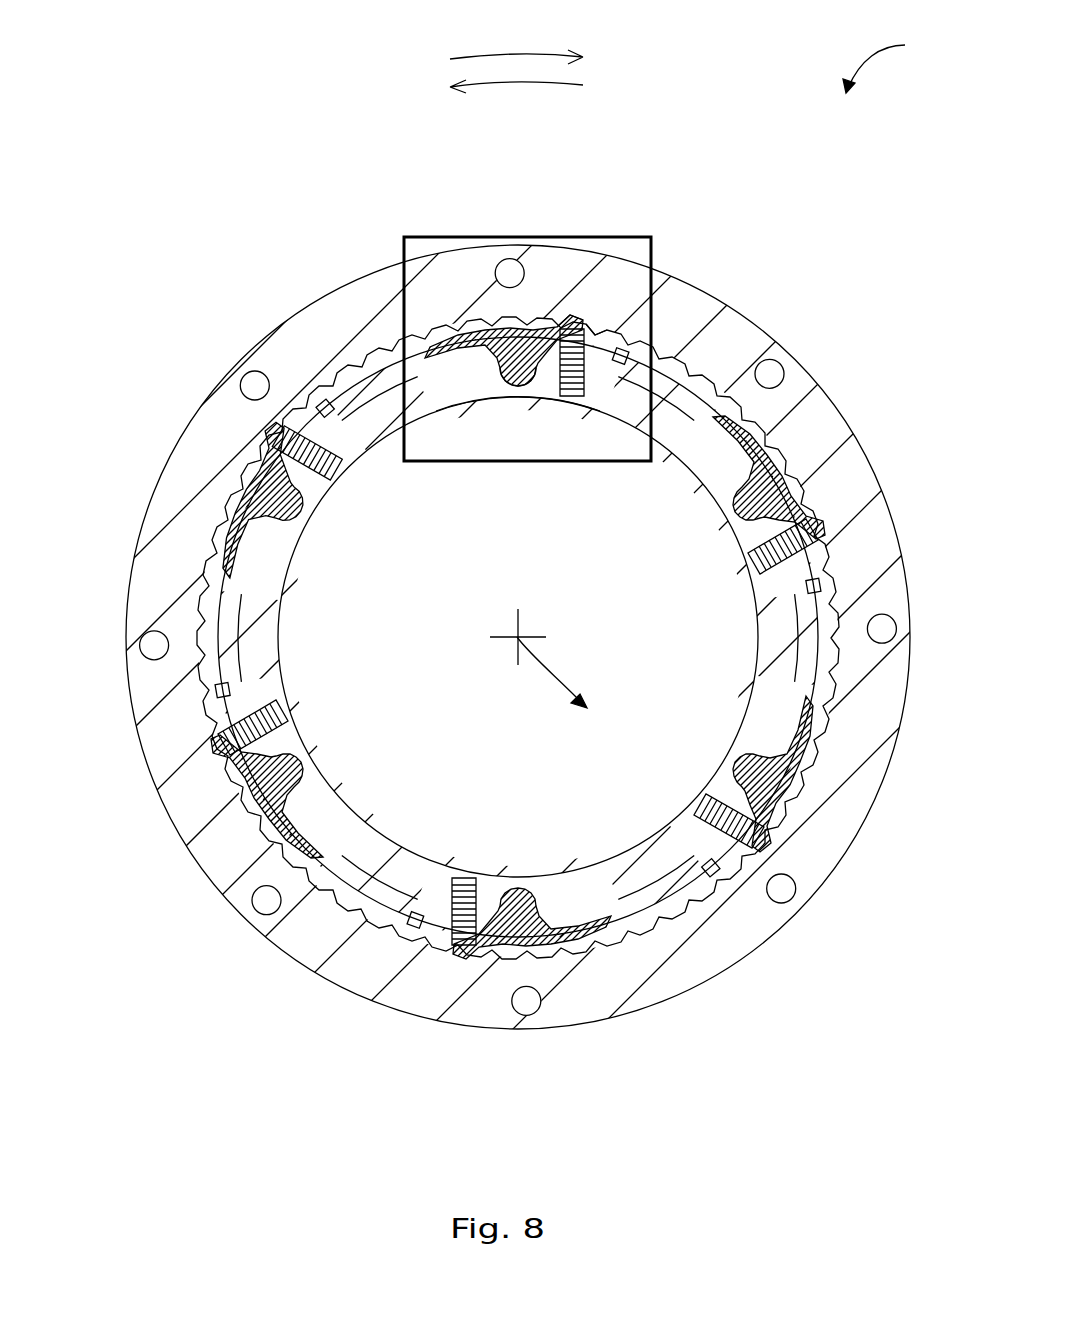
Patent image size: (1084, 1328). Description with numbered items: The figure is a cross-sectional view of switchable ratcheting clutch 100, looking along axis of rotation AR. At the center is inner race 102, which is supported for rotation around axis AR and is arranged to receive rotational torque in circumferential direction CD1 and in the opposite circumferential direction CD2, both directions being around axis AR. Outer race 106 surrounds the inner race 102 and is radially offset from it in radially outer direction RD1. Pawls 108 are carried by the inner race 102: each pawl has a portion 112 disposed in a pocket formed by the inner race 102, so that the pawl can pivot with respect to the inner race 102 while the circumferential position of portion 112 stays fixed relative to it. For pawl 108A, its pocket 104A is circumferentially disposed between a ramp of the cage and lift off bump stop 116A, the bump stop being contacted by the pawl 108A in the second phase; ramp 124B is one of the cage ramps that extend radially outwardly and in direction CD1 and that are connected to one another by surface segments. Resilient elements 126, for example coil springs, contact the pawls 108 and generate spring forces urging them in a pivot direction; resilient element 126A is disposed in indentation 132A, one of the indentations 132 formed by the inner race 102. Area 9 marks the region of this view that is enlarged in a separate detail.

The switchable ratcheting clutch 100 is at (899, 62).
The inner race 102 is at (638, 847).
The pocket 104A is at (521, 388).
The outer race 106 is at (200, 425).
The pawls 108 is at (790, 432).
The pawl 108A is at (500, 333).
The portions 112 is at (517, 397).
The lift off bump stop 116A is at (600, 343).
The ramp 124B is at (652, 352).
The resilient elements 126 is at (297, 440).
The resilient element 126A is at (592, 328).
The indentations 132 is at (340, 468).
The indentation 132A is at (572, 398).
The area 9 is at (651, 237).
The axis of rotation AR is at (517, 637).
The radially outer direction RD1 is at (550, 668).
The circumferential direction CD1 is at (556, 84).
The circumferential direction CD2 is at (525, 53).